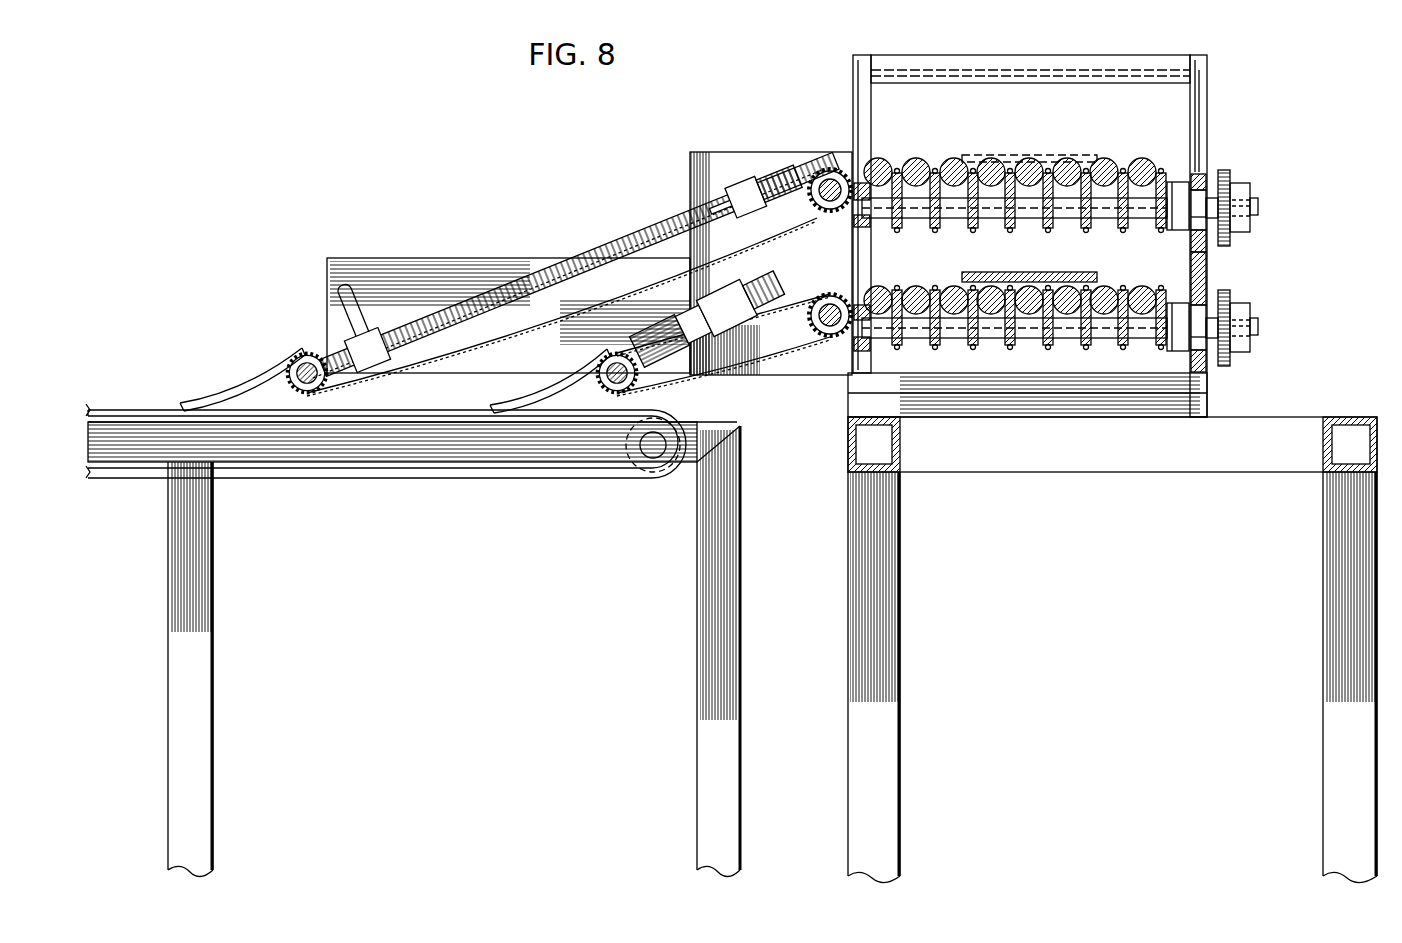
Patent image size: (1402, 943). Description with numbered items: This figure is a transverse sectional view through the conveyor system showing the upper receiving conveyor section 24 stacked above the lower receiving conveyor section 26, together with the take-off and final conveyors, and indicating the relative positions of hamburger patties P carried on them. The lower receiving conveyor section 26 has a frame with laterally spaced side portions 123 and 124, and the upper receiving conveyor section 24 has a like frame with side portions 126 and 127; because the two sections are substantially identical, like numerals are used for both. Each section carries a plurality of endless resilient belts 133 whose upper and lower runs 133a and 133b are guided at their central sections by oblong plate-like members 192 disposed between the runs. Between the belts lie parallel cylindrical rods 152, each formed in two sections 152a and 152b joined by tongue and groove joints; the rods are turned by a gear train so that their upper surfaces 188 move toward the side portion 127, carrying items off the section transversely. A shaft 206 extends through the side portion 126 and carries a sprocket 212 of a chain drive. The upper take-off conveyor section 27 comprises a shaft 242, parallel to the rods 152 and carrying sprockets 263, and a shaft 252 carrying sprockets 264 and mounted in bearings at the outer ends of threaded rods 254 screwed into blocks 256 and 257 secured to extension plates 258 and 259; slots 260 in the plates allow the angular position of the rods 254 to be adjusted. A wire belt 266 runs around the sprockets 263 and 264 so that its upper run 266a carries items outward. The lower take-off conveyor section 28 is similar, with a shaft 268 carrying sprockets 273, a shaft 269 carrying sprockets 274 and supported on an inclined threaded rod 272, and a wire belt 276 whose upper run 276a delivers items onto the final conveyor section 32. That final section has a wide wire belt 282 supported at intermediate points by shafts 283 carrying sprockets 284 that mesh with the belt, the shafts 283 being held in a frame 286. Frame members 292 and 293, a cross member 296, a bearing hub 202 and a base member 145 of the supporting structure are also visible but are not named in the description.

The upper receiving conveyor section 24 is at (1096, 271).
The lower receiving conveyor section 26 is at (1210, 372).
The upper take-off conveyor section 27 is at (474, 348).
The lower take-off conveyor section 28 is at (735, 380).
The final conveyor section 32 is at (148, 402).
The side portion 123 is at (1206, 280).
The side portion 124 is at (844, 373).
The side portion 126 is at (1210, 172).
The side portion 127 is at (840, 225).
The belt 133 is at (1040, 170).
The upper run 133a is at (1087, 165).
The lower run 133b is at (1087, 226).
The base frame 145 is at (1312, 412).
The rod 152 is at (952, 166).
The rod section 152a is at (1135, 162).
The rod section 152b is at (1138, 290).
The upper surface 188 is at (993, 165).
The plate-like member 192 is at (912, 164).
The bearing hub 202 is at (1178, 178).
The shaft 206 is at (1258, 205).
The sprocket 212 is at (1226, 170).
The shaft 242 is at (828, 168).
The shaft 252 is at (414, 442).
The rod 254 is at (655, 197).
The block 256 is at (735, 160).
The block 257 is at (380, 333).
The extension plate 258 is at (778, 153).
The extension plate 259 is at (465, 258).
The slot 260 is at (340, 285).
The sprocket 263 is at (800, 205).
The sprocket 264 is at (302, 352).
The wire belt 266 is at (602, 240).
The upper run 266a is at (578, 255).
The shaft 268 is at (832, 296).
The shaft 269 is at (603, 392).
The threaded rod 272 is at (650, 335).
The sprocket 273 is at (732, 285).
The sprocket 274 is at (627, 330).
The wire belt 276 is at (770, 362).
The upper run 276a is at (740, 358).
The wire belt 282 is at (418, 410).
The shaft 283 is at (622, 478).
The sprocket 284 is at (650, 458).
The frame 286 is at (745, 545).
The frame post 292 is at (1205, 100).
The frame post 293 is at (853, 92).
The top rail 296 is at (1080, 76).
The product plate P is at (242, 382).